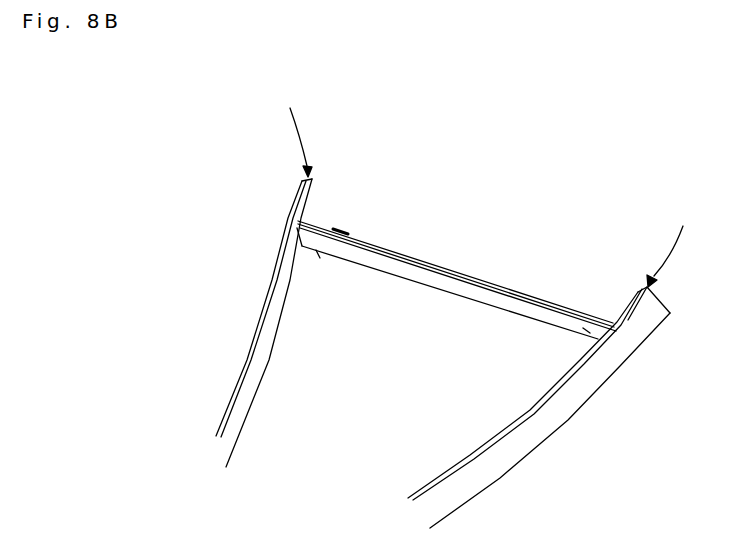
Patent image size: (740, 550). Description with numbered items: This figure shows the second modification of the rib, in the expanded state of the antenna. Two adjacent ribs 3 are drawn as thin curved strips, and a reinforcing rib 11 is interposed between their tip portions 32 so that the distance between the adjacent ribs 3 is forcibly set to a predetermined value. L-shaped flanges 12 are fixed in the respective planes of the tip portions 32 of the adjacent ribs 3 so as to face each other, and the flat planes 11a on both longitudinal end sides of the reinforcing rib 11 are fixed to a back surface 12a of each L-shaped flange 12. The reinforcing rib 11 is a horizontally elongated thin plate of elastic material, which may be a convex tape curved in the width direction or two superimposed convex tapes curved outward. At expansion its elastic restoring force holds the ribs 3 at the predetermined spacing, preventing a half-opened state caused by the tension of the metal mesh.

The rib 3 is at (298, 243).
The reinforcing rib 11 is at (402, 246).
The flat plane 11a is at (517, 285).
The L-shaped flange 12 is at (337, 229).
The back surface 12a is at (318, 262).
The tip portion 32 is at (486, 186).